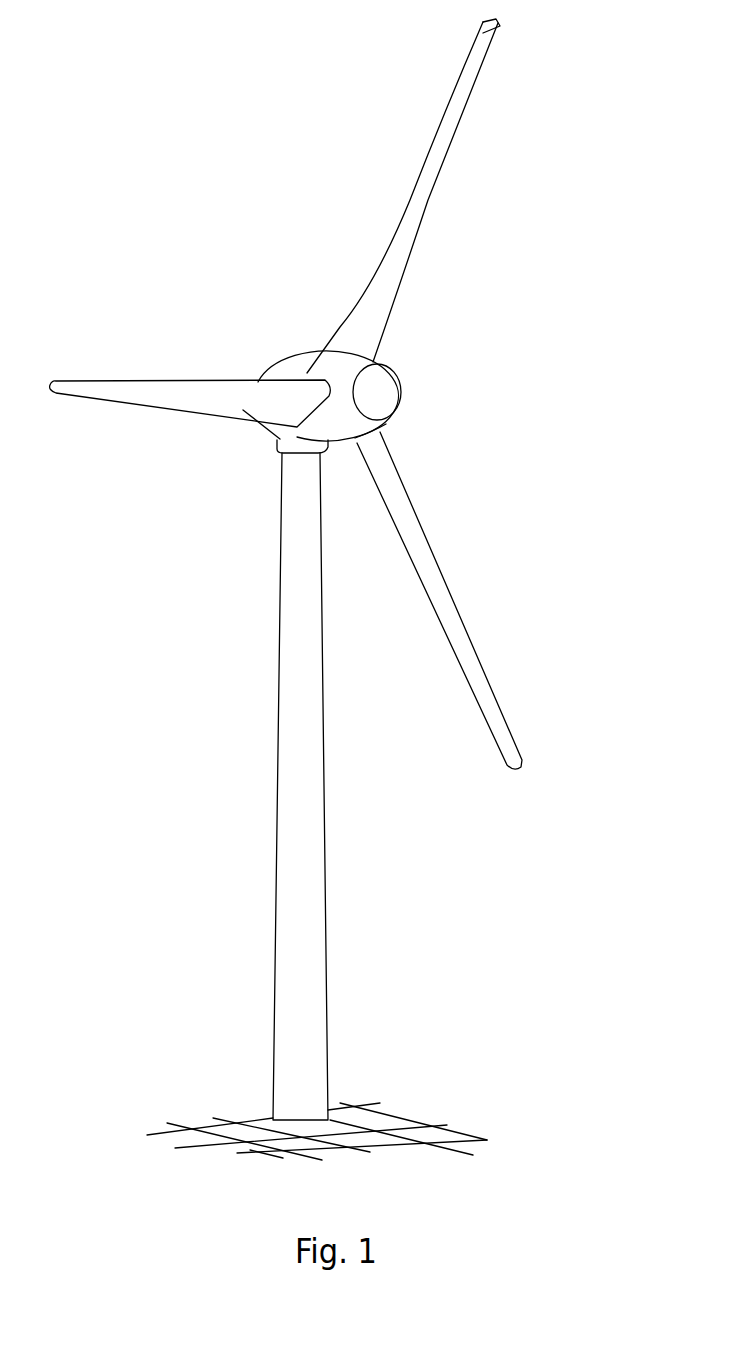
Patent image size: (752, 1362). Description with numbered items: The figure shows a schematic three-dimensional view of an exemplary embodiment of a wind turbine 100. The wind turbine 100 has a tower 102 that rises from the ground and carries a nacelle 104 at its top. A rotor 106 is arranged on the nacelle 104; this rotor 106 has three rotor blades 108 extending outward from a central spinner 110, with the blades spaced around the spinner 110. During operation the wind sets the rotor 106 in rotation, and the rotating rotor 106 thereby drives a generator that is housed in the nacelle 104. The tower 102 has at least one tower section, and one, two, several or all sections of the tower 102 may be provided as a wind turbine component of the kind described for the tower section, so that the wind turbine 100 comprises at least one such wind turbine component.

The wind turbine 100 is at (230, 526).
The tower 102 is at (307, 880).
The nacelle 104 is at (298, 367).
The rotor 106 is at (480, 305).
The rotor blades 108 is at (443, 147).
The spinner 110 is at (383, 392).